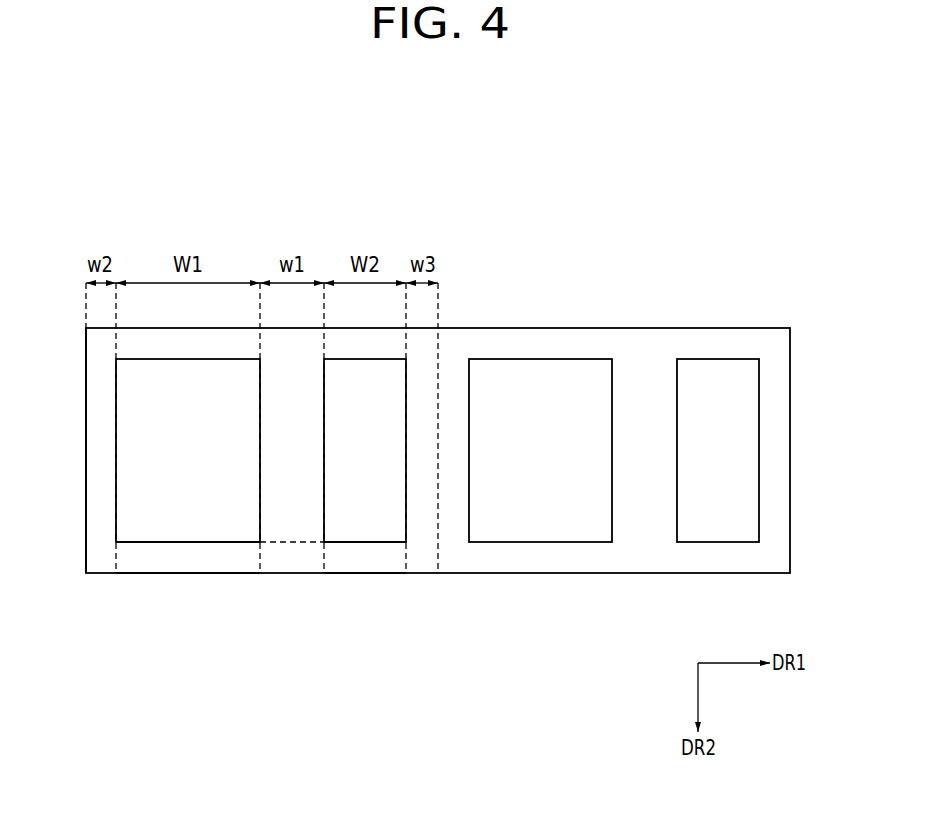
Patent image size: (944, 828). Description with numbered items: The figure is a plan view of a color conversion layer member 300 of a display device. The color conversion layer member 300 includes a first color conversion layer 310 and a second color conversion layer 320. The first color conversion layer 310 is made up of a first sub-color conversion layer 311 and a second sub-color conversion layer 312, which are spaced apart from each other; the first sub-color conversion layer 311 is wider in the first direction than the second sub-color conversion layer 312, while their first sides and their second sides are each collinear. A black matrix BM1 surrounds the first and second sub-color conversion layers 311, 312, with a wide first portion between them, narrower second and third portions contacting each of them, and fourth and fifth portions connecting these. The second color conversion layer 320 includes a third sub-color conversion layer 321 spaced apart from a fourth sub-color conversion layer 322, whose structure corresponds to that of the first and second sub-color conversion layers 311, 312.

The color conversion layer member 300 is at (767, 140).
The first color conversion layer 310 is at (271, 496).
The first sub-color conversion layer 311 is at (153, 515).
The second sub-color conversion layer 312 is at (413, 515).
The second color conversion layer 320 is at (614, 382).
The third sub-color conversion layer 321 is at (539, 372).
The fourth sub-color conversion layer 322 is at (718, 401).
The black matrix BM1 is at (275, 477).